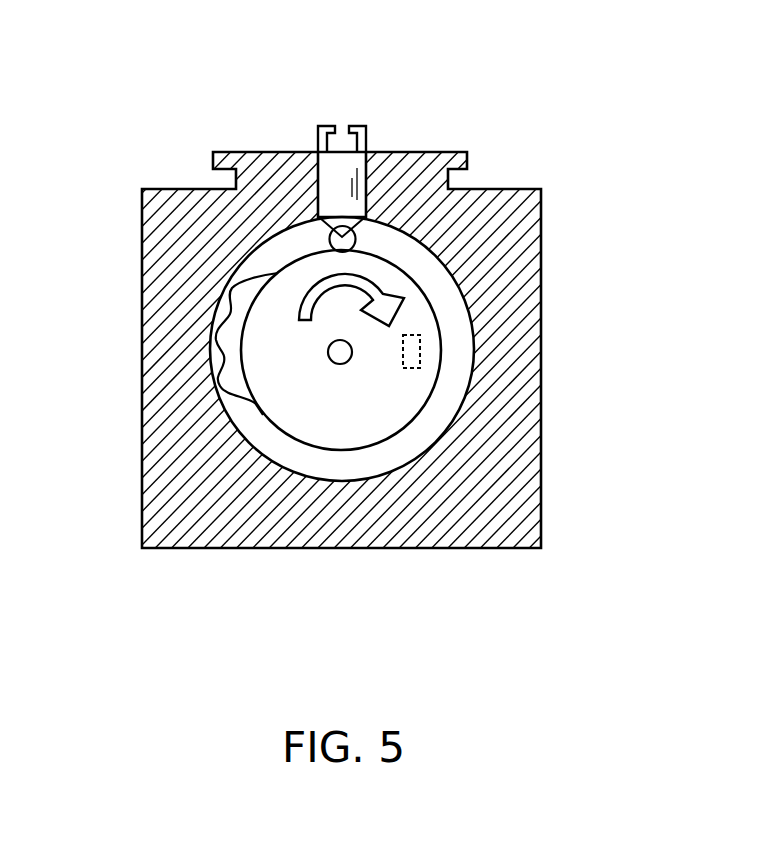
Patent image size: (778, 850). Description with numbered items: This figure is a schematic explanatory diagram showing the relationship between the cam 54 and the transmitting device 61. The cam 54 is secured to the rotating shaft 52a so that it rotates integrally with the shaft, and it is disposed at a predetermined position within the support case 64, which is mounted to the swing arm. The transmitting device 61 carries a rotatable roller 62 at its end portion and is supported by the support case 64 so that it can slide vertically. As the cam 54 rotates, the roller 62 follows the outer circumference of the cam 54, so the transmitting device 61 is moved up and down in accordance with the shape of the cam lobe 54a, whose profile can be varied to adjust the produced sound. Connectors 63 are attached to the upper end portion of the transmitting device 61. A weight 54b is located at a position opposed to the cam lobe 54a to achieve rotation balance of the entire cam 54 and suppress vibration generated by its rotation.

The rotating shaft 52a is at (340, 352).
The cam 54 is at (327, 423).
The cam lobe 54a is at (235, 378).
The weight 54b is at (421, 349).
The transmitting device 61 is at (328, 187).
The roller 62 is at (357, 243).
The connectors 63 is at (323, 127).
The support case 64 is at (142, 268).